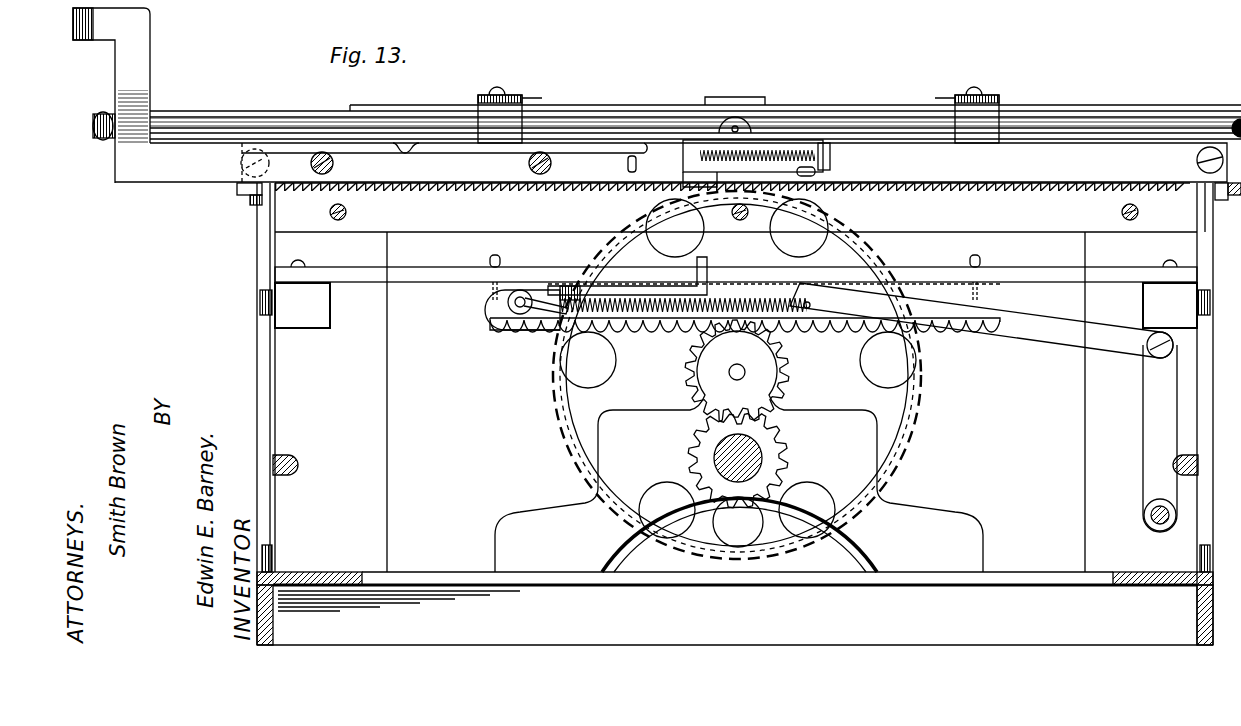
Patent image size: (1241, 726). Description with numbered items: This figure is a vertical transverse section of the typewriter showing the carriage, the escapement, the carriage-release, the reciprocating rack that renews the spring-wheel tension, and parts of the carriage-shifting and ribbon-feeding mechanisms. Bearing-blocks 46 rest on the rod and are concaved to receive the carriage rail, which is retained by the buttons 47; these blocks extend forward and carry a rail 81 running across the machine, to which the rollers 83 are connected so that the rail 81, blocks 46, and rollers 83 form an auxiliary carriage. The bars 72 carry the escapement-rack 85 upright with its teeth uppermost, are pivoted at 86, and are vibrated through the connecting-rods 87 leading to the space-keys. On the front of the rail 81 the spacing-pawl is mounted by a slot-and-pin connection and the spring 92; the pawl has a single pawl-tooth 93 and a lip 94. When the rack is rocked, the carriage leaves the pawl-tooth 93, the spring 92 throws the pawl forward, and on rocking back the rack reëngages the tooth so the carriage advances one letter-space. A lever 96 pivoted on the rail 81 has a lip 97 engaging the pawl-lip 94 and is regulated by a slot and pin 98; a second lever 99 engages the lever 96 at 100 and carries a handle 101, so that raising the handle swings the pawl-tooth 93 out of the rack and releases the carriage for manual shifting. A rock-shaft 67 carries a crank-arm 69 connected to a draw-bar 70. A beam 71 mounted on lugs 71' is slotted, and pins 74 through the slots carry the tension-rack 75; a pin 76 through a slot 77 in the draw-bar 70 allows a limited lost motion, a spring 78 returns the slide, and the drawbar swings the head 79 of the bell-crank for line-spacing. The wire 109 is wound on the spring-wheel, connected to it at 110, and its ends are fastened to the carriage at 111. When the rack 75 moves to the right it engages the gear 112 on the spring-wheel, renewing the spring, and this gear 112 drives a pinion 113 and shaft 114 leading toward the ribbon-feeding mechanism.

The bearing-block 46 is at (695, 116).
The button 47 is at (738, 107).
The rock-shaft 67 is at (1146, 520).
The crank-arm 69 is at (1160, 438).
The draw-bar 70 is at (981, 320).
The beam 71 is at (736, 402).
The lug 71' is at (736, 305).
The bar 72 is at (1221, 366).
The pin 74 is at (732, 267).
The tension-rack 75 is at (800, 333).
The pin 76 is at (512, 335).
The slot 77 is at (492, 310).
The spring 78 is at (566, 292).
The head 79 is at (774, 268).
The rail 81 is at (671, 163).
The roller 83 is at (741, 100).
The escapement-rack 85 is at (736, 207).
The pivot 86 is at (259, 302).
The connecting-rod 87 is at (1196, 460).
The spring 92 is at (825, 160).
The pawl-tooth 93 is at (737, 375).
The lip 94 is at (753, 163).
The lever 96 is at (444, 159).
The lip 97 is at (835, 170).
The slot and pin 98 is at (647, 163).
The lever 99 is at (156, 146).
The engagement point 100 is at (430, 159).
The handle 101 is at (150, 42).
The wire 109 is at (258, 188).
The wire connection 110 is at (694, 540).
The wire end connection 111 is at (235, 203).
The gear 112 is at (757, 372).
The pinion 113 is at (761, 458).
The shaft 114 is at (739, 385).